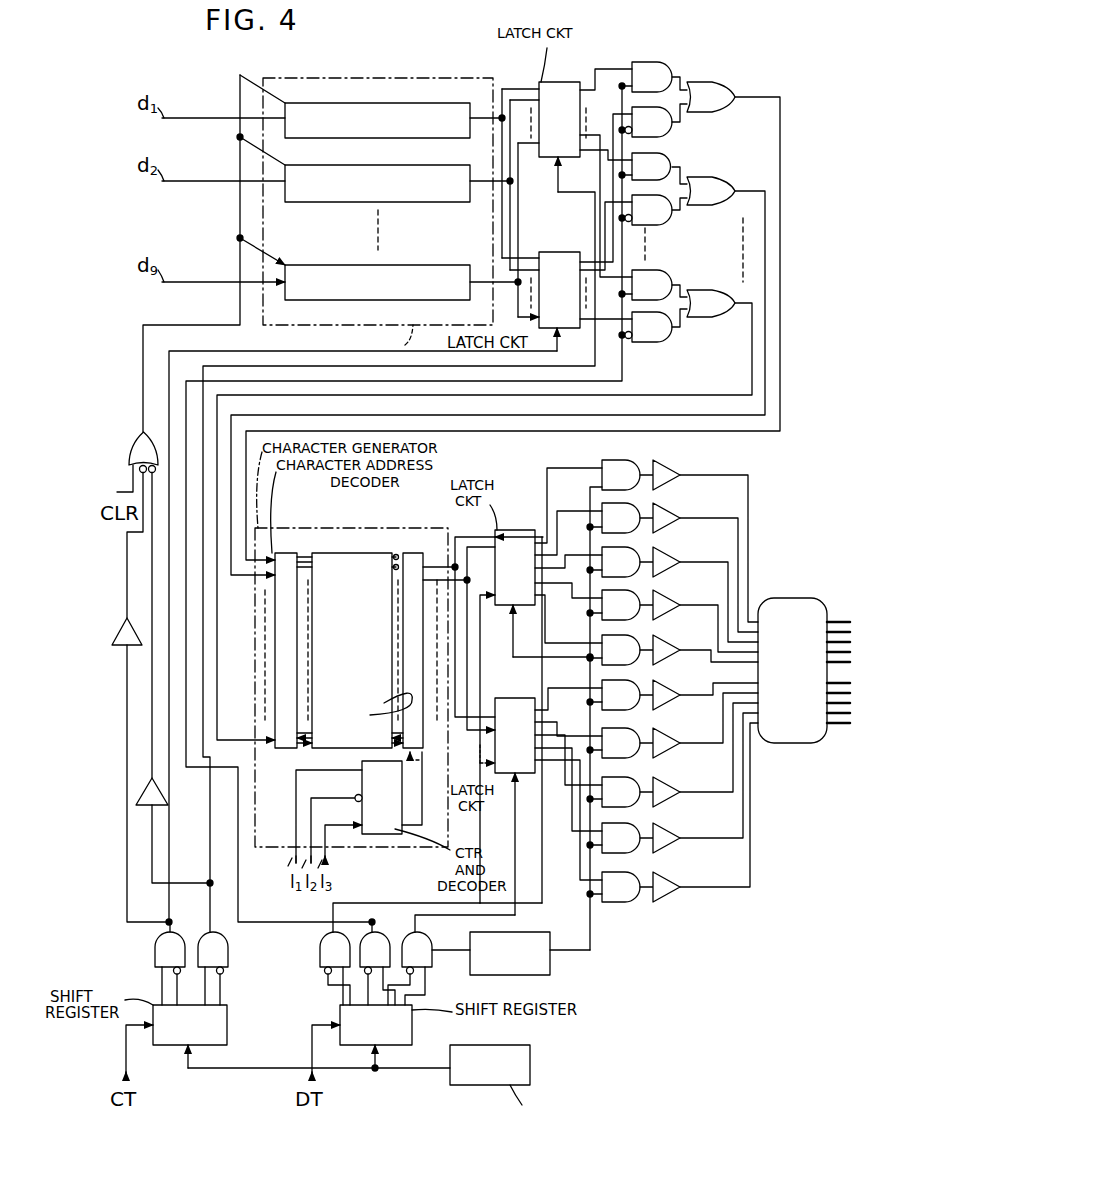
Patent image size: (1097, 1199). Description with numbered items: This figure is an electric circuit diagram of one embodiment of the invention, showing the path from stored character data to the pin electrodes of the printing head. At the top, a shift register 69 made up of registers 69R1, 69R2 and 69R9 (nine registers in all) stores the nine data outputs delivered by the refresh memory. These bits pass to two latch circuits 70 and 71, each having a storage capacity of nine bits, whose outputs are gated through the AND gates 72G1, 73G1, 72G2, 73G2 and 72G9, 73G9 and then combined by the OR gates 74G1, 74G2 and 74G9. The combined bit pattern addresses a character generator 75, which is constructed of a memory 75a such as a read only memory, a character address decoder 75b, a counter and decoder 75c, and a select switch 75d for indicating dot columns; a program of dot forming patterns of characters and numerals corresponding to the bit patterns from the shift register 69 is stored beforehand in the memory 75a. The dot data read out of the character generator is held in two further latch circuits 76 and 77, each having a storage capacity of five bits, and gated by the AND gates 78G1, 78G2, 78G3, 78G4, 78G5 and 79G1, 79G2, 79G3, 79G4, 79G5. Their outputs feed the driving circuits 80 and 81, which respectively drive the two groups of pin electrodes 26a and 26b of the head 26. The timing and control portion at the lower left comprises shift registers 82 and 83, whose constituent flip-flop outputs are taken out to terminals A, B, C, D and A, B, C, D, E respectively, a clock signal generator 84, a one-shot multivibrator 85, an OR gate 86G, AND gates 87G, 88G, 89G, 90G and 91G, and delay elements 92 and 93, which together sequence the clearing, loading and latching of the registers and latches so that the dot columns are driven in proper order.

The shift register 69 is at (345, 78).
The register 69R1 is at (445, 103).
The register 69R2 is at (425, 202).
The register 69R9 is at (345, 265).
The latch circuit 70 is at (556, 82).
The latch circuit 71 is at (552, 254).
The AND gate 72G1 is at (662, 68).
The AND gate 73G1 is at (672, 127).
The OR gate 74G1 is at (722, 86).
The AND gate 72G2 is at (672, 160).
The AND gate 73G2 is at (672, 217).
The OR gate 74G2 is at (718, 200).
The AND gate 72G9 is at (672, 276).
The AND gate 73G9 is at (672, 335).
The OR gate 74G9 is at (722, 312).
The OR gate 86G is at (135, 435).
The delay element 92 is at (122, 648).
The delay element 93 is at (166, 790).
The character generator 75 is at (338, 524).
The memory 75a is at (362, 553).
The character address decoder 75b is at (286, 553).
The counter and decoder 75c is at (386, 834).
The select switch 75d is at (418, 553).
The latch circuit 76 is at (506, 530).
The latch circuit 77 is at (508, 698).
The AND gate 78G1 is at (602, 462).
The AND gate 78G2 is at (635, 505).
The AND gate 78G3 is at (635, 549).
The AND gate 78G4 is at (635, 592).
The AND gate 78G5 is at (635, 637).
The AND gate 79G1 is at (602, 683).
The AND gate 79G2 is at (635, 730).
The AND gate 79G3 is at (635, 779).
The AND gate 79G4 is at (635, 825).
The AND gate 79G5 is at (622, 900).
The driving circuit 80 is at (675, 468).
The driving circuit 81 is at (678, 688).
The pin electrode head 26 is at (792, 598).
The pin electrodes 26a is at (838, 618).
The pin electrodes 26b is at (838, 728).
The AND gate 87G is at (155, 950).
The AND gate 88G is at (222, 950).
The AND gate 89G is at (322, 970).
The AND gate 90G is at (378, 940).
The AND gate 91G is at (432, 970).
The shift register 82 is at (228, 1030).
The shift register 83 is at (412, 1030).
The clock signal generator 84 is at (527, 1047).
The one-shot multivibrator 85 is at (522, 975).